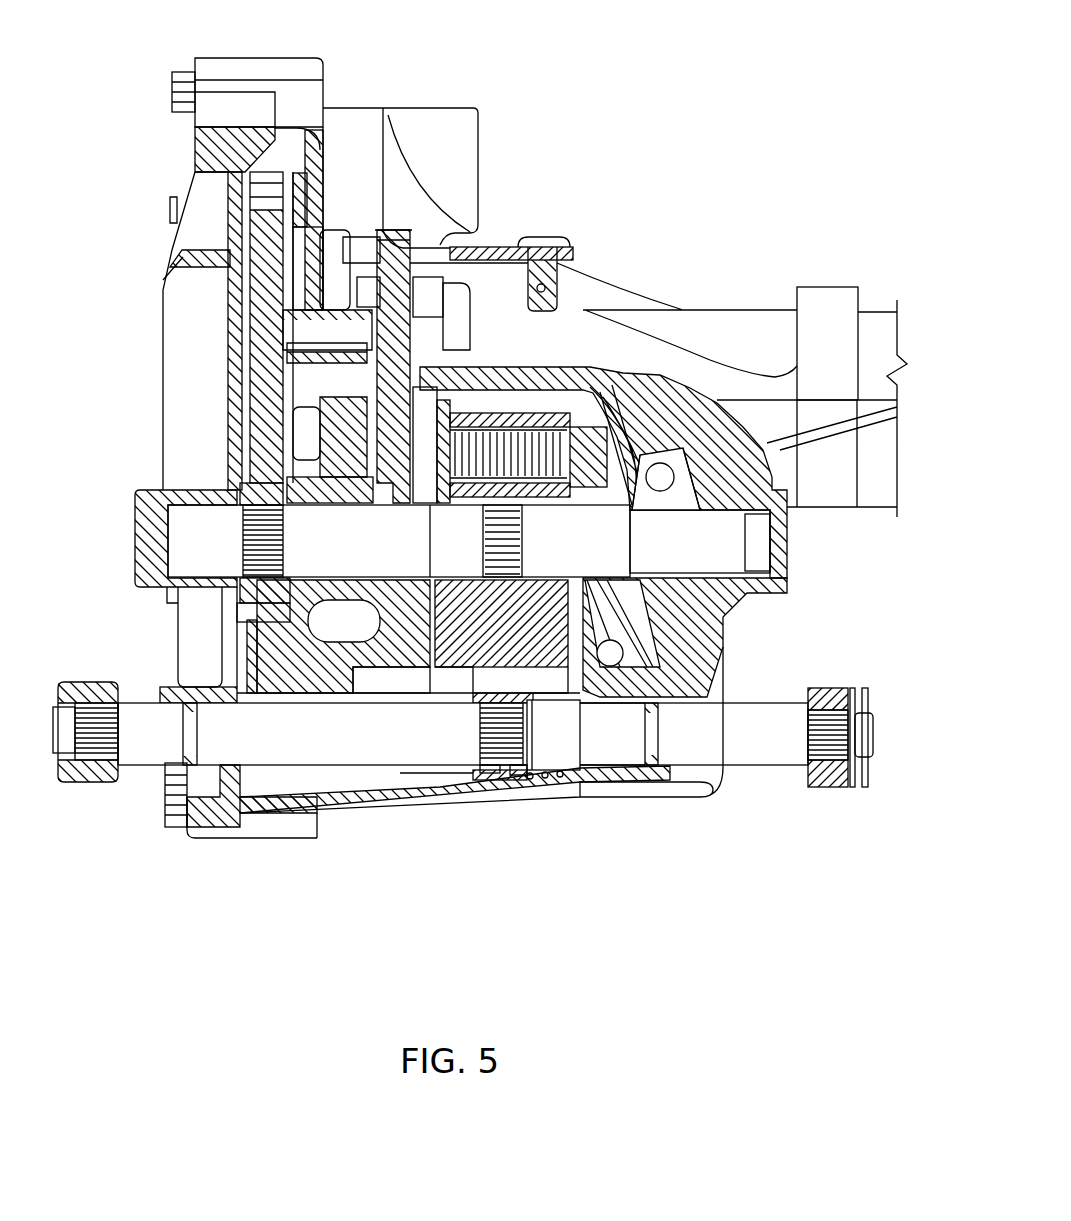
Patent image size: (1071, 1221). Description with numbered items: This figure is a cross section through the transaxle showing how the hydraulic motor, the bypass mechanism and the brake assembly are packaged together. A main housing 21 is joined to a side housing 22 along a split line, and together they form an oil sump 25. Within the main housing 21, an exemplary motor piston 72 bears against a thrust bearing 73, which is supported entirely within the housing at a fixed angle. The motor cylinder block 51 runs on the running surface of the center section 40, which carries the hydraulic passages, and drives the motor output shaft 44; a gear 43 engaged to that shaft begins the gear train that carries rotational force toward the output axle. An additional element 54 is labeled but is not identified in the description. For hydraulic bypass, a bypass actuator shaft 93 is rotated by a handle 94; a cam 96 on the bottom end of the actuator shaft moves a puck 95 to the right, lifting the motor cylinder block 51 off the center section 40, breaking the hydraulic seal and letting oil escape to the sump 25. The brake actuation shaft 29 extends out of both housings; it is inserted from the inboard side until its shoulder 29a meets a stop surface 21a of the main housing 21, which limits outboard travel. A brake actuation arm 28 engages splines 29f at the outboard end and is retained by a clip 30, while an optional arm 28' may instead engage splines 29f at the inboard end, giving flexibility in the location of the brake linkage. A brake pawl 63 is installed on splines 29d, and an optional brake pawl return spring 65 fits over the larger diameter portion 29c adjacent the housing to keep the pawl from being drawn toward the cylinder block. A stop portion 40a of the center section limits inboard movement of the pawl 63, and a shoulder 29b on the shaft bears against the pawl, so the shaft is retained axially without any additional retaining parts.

The main housing 21 is at (368, 813).
The stop surface 21a is at (570, 705).
The side housing 22 is at (213, 840).
The oil sump 25 is at (450, 780).
The brake actuation arm 28 is at (535, 450).
The brake actuation arm 28' is at (535, 450).
The brake actuation shaft 29 is at (354, 745).
The shoulder 29a is at (582, 718).
The shoulder 29b is at (513, 775).
The larger diameter portion 29c is at (563, 750).
The splines 29d is at (500, 732).
The splines 29f is at (103, 726).
The clip 30 is at (860, 688).
The center section 40 is at (407, 630).
The stop portion 40a is at (458, 687).
The gear 43 is at (240, 487).
The motor output shaft 44 is at (327, 552).
The motor cylinder block 51 is at (490, 413).
The splines 54 is at (515, 540).
The brake pawl 63 is at (488, 777).
The brake pawl return spring 65 is at (550, 779).
The motor piston 72 is at (623, 500).
The thrust bearing 73 is at (693, 477).
The bypass actuator shaft 93 is at (397, 223).
The handle 94 is at (497, 247).
The puck 95 is at (430, 500).
The cam 96 is at (413, 493).